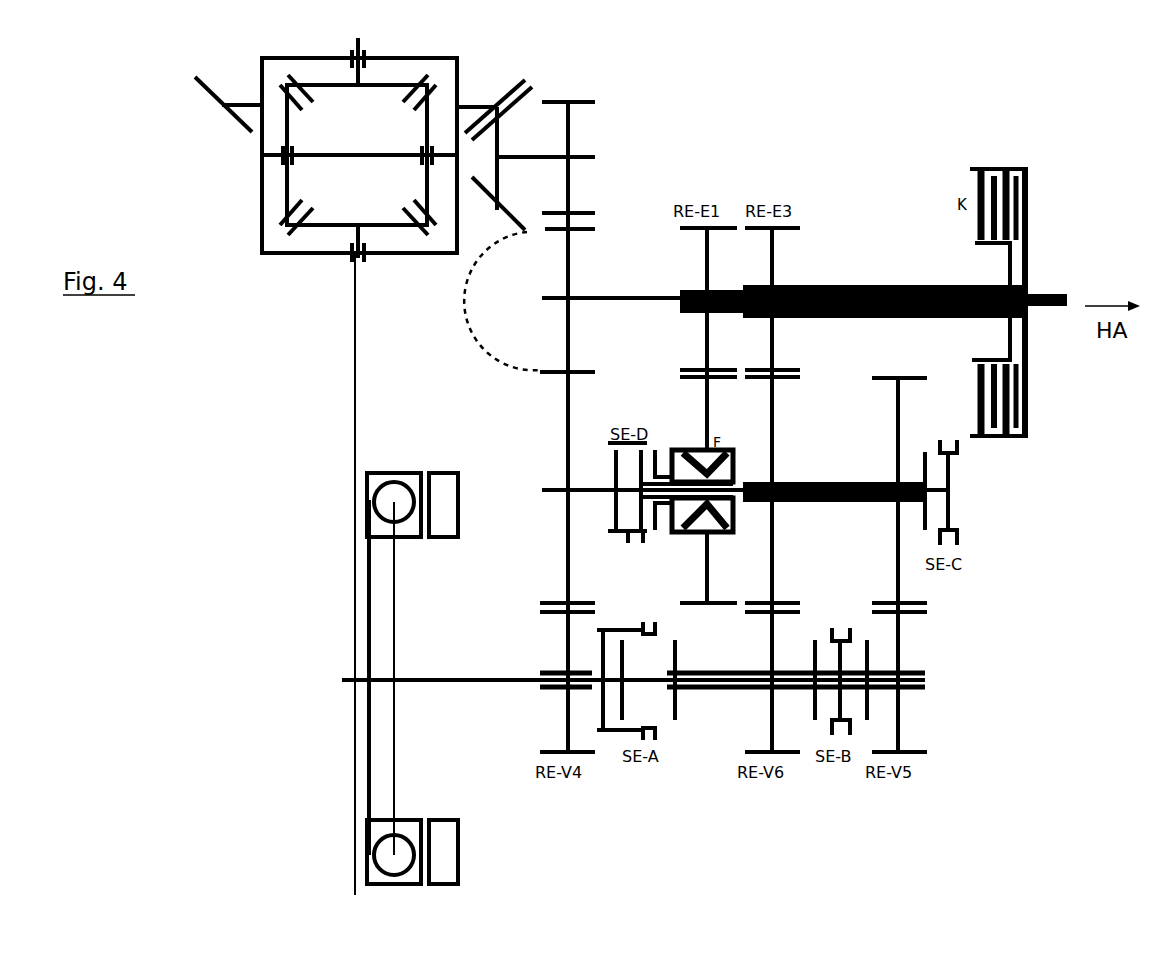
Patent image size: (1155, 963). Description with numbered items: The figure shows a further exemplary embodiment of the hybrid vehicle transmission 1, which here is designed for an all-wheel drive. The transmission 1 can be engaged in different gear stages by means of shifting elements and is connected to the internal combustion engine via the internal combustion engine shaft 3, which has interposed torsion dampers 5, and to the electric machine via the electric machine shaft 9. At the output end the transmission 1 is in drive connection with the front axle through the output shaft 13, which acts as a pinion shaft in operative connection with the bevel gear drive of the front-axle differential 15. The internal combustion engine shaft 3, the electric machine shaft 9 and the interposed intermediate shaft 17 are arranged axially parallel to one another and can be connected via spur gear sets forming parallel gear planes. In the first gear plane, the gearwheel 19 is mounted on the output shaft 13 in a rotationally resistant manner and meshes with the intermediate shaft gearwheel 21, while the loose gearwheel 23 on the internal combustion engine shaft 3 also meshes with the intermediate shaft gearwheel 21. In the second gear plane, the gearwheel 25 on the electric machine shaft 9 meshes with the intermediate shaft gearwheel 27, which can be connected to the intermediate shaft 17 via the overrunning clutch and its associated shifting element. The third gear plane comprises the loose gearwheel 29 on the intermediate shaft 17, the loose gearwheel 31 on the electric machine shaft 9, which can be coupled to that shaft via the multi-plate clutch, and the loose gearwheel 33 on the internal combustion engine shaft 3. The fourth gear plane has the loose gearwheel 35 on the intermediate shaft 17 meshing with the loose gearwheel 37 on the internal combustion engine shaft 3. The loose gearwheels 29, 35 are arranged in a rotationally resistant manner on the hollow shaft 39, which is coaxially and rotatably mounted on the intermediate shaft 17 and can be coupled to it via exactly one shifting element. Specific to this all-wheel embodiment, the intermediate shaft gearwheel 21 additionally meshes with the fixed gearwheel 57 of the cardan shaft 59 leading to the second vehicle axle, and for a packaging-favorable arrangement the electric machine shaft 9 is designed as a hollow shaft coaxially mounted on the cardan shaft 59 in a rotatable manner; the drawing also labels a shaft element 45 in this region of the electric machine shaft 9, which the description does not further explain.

The automatically shiftable vehicle transmission 1 is at (922, 808).
The internal combustion engine shaft 3 is at (418, 678).
The torsion dampers 5 is at (400, 880).
The electric machine shaft 9 is at (606, 298).
The output shaft 13 is at (588, 212).
The front-axle differential 15 is at (428, 58).
The intermediate shaft 17 is at (556, 488).
The gearwheel 19 is at (578, 98).
The intermediate shaft gearwheel 21 is at (565, 415).
The loose gearwheel 23 is at (560, 625).
The gearwheel 25 is at (705, 338).
The intermediate shaft gearwheel 27 is at (705, 578).
The loose gearwheel 29 is at (780, 428).
The loose gearwheel 31 is at (775, 252).
The loose gearwheel 33 is at (747, 742).
The loose gearwheel 35 is at (885, 378).
The loose gearwheel 37 is at (903, 641).
The hollow shaft 39 is at (840, 502).
The hollow shaft 45 is at (888, 285).
The fixed gearwheel 57 is at (570, 246).
The cardan shaft 59 is at (1060, 297).